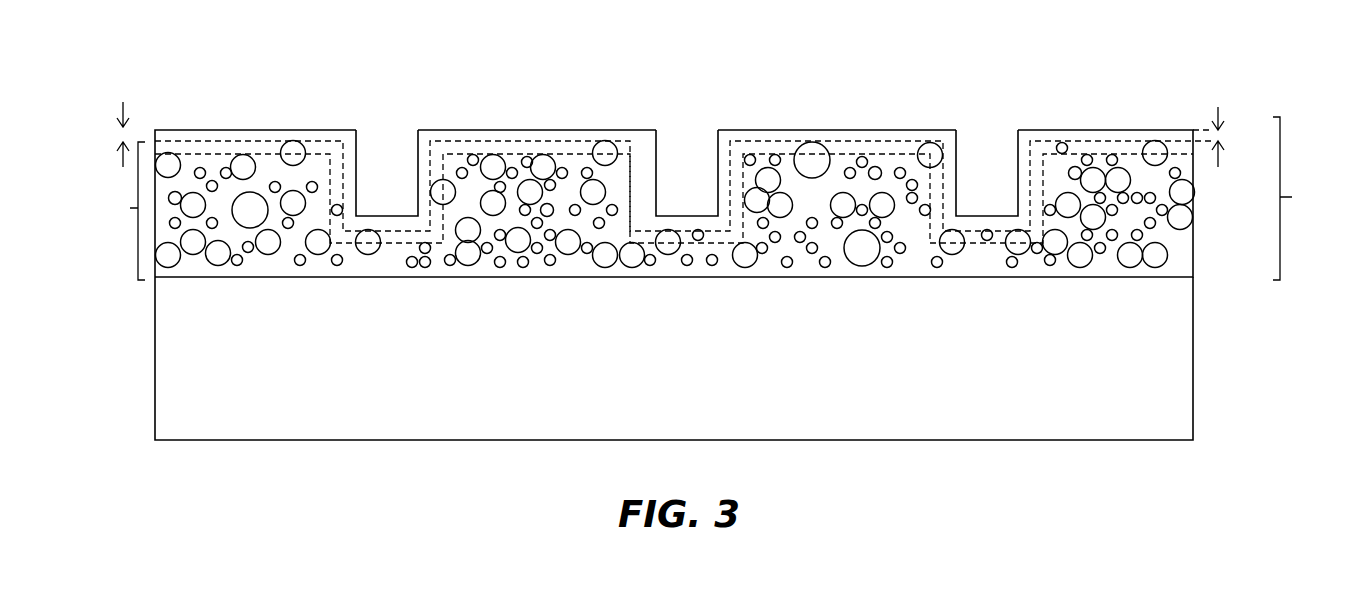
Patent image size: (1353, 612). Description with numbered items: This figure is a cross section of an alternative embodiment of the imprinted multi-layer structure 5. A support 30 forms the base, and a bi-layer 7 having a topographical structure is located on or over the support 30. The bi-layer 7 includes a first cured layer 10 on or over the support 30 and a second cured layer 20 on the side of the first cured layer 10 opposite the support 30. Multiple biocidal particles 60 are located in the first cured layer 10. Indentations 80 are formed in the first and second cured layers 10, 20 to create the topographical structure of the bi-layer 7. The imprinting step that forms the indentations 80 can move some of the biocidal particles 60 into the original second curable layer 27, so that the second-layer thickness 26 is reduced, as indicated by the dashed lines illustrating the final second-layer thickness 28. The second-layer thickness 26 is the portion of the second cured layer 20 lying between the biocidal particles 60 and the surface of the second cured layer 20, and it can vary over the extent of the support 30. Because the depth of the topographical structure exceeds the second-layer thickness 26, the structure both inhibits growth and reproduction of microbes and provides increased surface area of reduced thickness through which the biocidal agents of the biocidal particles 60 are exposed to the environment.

The imprinted multi-layer structure 5 is at (1150, 73).
The bi-layer 7 is at (1294, 198).
The first cured layer 10 is at (1232, 262).
The second cured layer 20 is at (1221, 106).
The second-layer thickness 26 is at (125, 102).
The original second curable layer 27 is at (263, 153).
The final second-layer thickness 28 is at (563, 141).
The support 30 is at (1193, 345).
The biocidal particles 60 is at (487, 153).
The indentations 80 is at (387, 119).